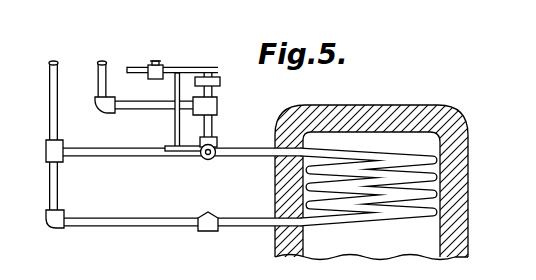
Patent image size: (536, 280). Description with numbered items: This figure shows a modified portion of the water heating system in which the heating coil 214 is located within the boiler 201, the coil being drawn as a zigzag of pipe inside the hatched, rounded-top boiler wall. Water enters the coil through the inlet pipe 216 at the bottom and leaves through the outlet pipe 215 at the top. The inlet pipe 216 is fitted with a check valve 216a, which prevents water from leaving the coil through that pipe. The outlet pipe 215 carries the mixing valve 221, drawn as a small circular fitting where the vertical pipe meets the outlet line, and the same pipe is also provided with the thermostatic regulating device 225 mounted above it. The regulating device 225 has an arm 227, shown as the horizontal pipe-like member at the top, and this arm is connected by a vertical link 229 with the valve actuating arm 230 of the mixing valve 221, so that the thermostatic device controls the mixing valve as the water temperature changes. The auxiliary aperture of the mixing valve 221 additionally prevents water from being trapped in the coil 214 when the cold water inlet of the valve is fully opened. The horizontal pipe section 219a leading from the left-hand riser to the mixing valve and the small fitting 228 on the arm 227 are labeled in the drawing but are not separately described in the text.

The tank / vessel wall 201 is at (469, 190).
The heating coil 214 is at (381, 215).
The outlet pipe 215 is at (98, 79).
The inlet pipe 216 is at (132, 226).
The check valve 216a is at (211, 232).
The branch pipe 219a is at (110, 156).
The mixing valve 221 is at (214, 158).
The thermostatic regulating device 225 is at (221, 82).
The arm 227 is at (201, 60).
The valve 228 is at (151, 65).
The link 229 is at (175, 125).
The valve actuating arm 230 is at (190, 153).